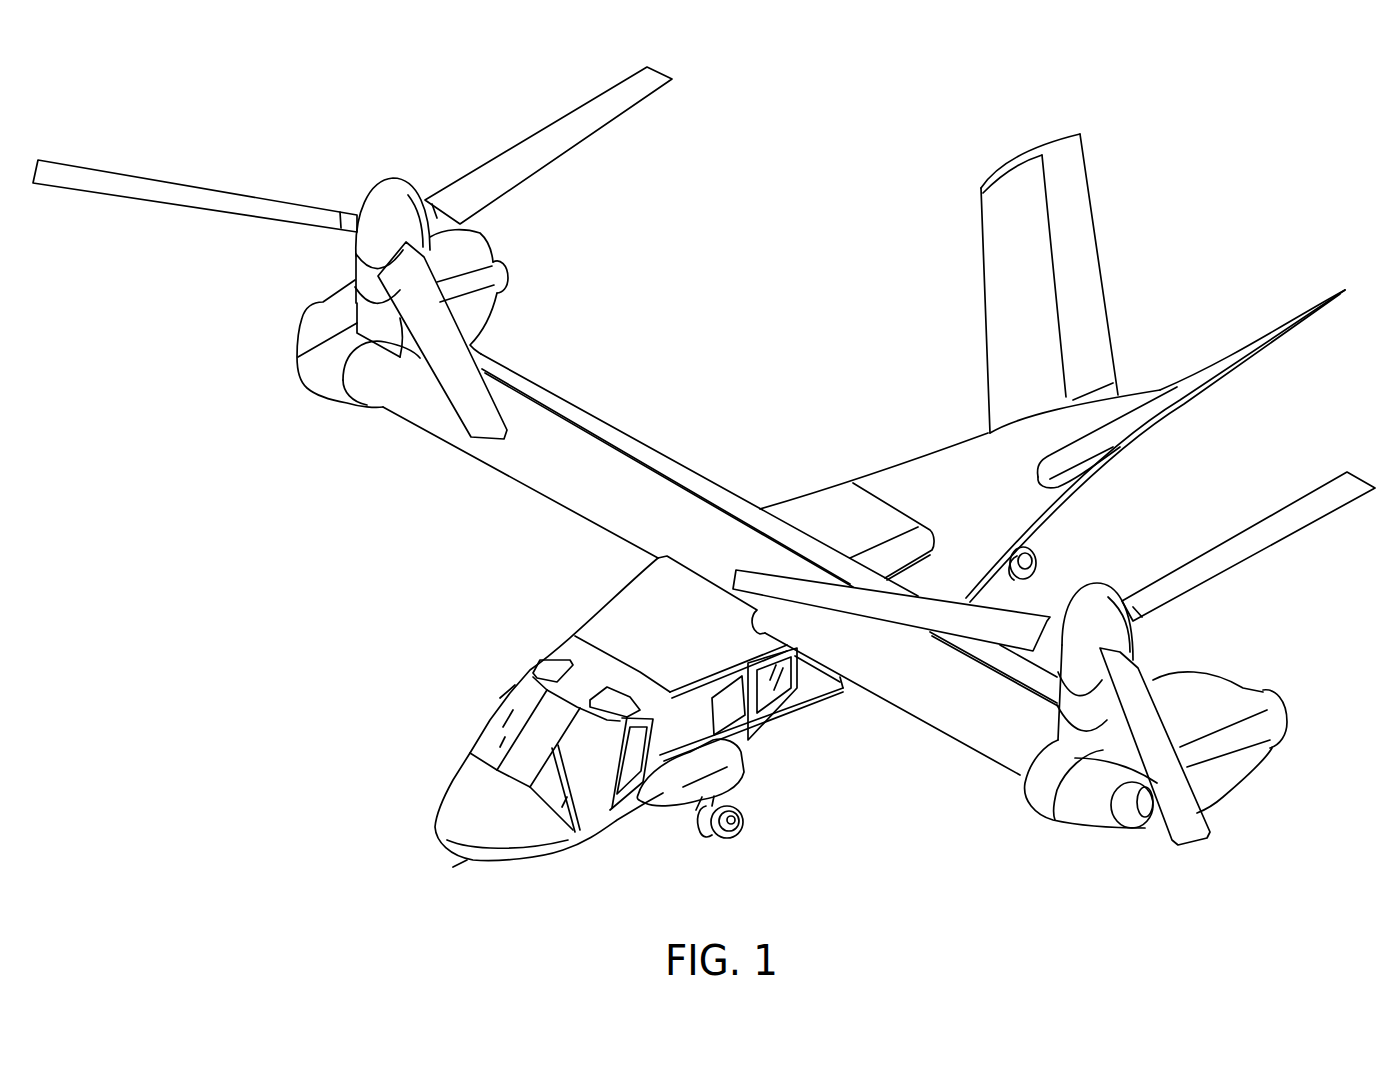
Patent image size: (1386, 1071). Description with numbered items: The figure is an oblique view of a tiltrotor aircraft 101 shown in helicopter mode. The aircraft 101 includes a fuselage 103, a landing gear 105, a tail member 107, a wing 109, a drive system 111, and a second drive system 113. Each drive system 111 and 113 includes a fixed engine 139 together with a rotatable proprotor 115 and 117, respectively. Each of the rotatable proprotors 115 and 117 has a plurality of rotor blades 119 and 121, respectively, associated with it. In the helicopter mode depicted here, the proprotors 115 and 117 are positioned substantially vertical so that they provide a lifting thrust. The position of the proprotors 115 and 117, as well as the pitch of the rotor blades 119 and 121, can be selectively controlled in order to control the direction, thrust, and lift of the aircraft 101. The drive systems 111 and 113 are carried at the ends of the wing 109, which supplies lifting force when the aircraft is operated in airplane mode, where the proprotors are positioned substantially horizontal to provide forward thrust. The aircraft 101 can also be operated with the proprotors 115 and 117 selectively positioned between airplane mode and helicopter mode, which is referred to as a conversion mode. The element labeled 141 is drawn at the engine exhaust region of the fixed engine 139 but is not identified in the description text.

The tiltrotor aircraft 101 is at (1175, 110).
The fuselage 103 is at (521, 862).
The landing gear 105 is at (732, 840).
The tail member 107 is at (1100, 238).
The wing 109 is at (926, 728).
The drive system 111 is at (1047, 862).
The drive system 113 is at (278, 252).
The rotatable proprotor 115 is at (1136, 648).
The rotatable proprotor 117 is at (391, 177).
The rotor blades 119 is at (1325, 516).
The rotor blades 121 is at (536, 132).
The fixed engine 139 is at (1240, 777).
The engine exhaust 141 is at (1125, 810).